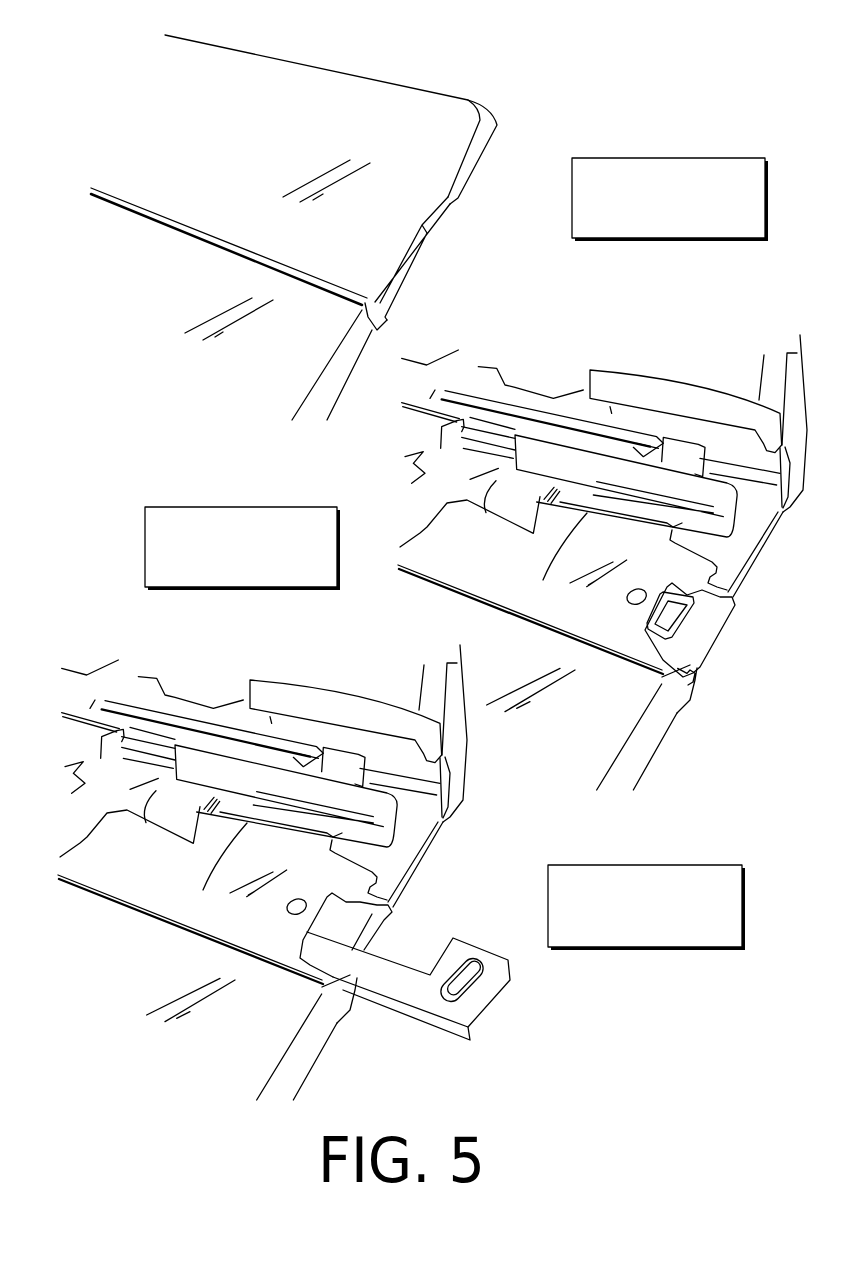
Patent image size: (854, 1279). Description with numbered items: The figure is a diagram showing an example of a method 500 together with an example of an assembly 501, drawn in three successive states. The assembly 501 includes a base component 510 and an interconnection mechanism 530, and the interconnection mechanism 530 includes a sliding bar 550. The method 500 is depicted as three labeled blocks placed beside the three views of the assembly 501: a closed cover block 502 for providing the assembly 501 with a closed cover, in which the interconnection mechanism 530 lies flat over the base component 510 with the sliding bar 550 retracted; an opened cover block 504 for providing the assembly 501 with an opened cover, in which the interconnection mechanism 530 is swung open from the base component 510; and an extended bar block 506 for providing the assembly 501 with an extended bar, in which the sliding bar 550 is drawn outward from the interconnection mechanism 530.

The method 500 is at (487, 40).
The assembly 501 is at (136, 85).
The closed cover block 502 is at (685, 221).
The opened cover block 504 is at (258, 570).
The extended bar block 506 is at (662, 928).
The base component 510 is at (264, 383).
The interconnection mechanism 530 is at (245, 165).
The sliding bar 550 is at (408, 260).